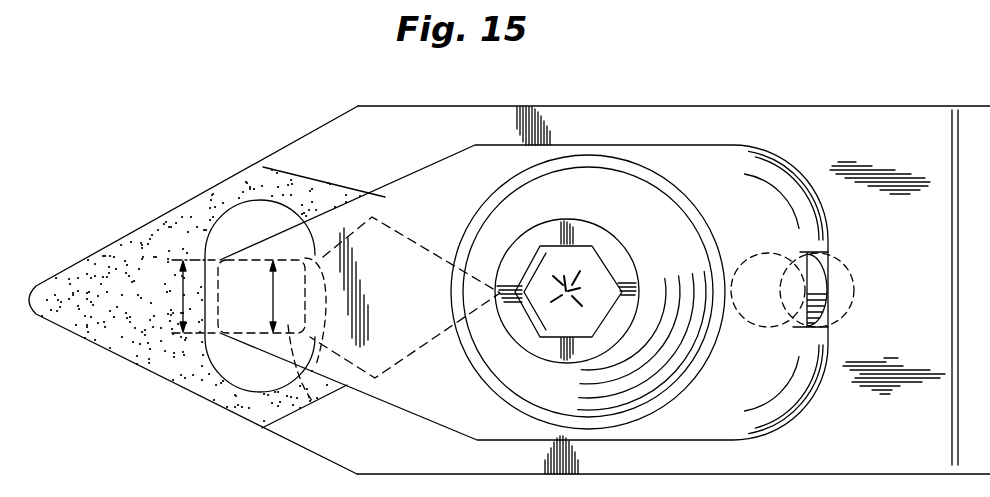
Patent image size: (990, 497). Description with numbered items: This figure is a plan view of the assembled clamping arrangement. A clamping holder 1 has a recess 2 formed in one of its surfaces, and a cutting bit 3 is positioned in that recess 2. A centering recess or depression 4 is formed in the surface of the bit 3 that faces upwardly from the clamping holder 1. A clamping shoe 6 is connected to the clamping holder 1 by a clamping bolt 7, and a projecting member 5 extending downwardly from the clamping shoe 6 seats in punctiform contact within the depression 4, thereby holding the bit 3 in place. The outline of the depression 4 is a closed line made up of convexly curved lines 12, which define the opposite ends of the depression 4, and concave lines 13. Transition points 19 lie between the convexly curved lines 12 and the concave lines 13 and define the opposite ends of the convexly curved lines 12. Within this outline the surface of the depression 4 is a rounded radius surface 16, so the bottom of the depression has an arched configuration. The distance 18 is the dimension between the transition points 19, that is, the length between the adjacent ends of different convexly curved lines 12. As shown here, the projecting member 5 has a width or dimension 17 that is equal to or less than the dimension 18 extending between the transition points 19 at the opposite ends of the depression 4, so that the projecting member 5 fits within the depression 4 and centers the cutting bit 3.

The clamping holder 1 is at (907, 97).
The recess 2 is at (442, 332).
The cutting bit 3 is at (155, 377).
The centering recess or depression 4 is at (233, 228).
The projecting member 5 is at (306, 398).
The clamping shoe 6 is at (575, 143).
The clamping bolt 7 is at (632, 194).
The convexly curved lines 12 is at (253, 207).
The concave lines 13 is at (309, 297).
The radius surface 16 is at (285, 228).
The width or dimension of projecting member 17 is at (272, 293).
The distance between transition points 18 is at (180, 293).
The transition points 19 is at (205, 257).